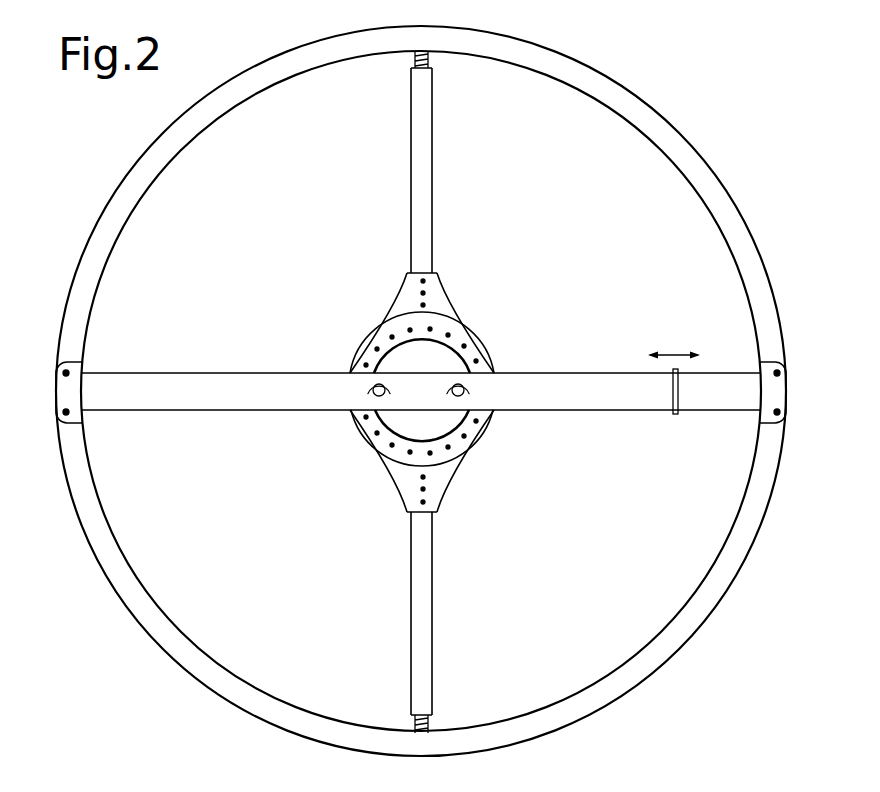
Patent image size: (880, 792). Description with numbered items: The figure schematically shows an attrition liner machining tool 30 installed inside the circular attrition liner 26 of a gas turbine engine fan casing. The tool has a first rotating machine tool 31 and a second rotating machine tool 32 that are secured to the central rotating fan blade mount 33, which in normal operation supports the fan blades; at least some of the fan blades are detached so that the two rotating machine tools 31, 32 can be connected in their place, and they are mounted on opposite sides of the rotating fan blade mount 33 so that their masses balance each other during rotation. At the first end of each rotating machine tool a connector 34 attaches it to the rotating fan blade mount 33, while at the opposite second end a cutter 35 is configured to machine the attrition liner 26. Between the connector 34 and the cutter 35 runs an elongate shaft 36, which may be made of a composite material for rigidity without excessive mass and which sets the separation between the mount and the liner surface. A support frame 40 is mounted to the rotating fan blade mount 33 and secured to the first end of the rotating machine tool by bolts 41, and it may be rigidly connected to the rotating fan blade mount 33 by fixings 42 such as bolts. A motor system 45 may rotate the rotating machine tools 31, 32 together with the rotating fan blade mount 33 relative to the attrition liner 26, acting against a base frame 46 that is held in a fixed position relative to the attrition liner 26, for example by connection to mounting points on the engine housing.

The attrition liner 26 is at (676, 162).
The attrition liner machining tool 30 is at (617, 70).
The first rotating machine tool 31 is at (441, 153).
The second rotating machine tool 32 is at (442, 653).
The rotating fan blade mount 33 is at (398, 362).
The connector 34 is at (432, 300).
The cutter 35 is at (434, 57).
The elongate shaft 36 is at (434, 213).
The support frame 40 is at (491, 431).
The bolts 41 is at (404, 505).
The fixings 42 is at (365, 424).
The motor system 45 is at (474, 380).
The base frame 46 is at (126, 372).